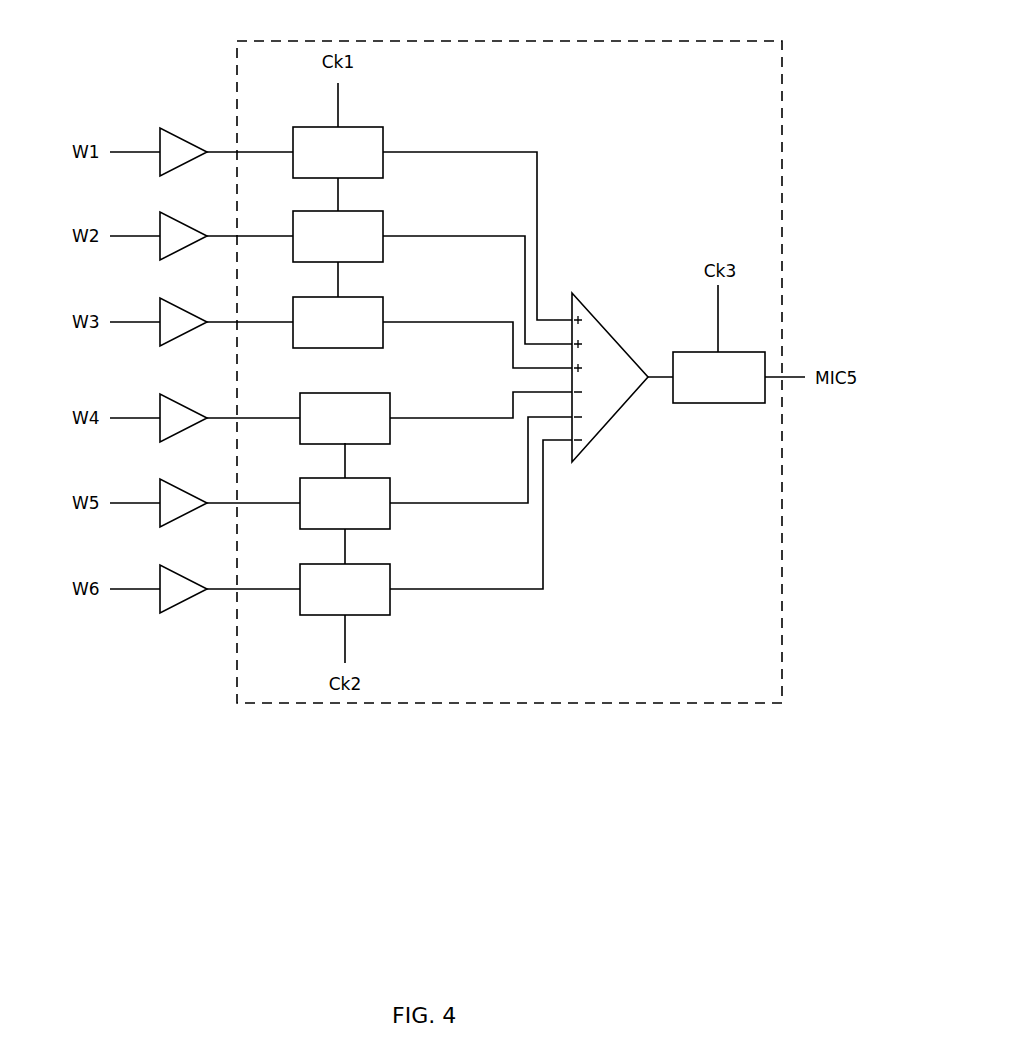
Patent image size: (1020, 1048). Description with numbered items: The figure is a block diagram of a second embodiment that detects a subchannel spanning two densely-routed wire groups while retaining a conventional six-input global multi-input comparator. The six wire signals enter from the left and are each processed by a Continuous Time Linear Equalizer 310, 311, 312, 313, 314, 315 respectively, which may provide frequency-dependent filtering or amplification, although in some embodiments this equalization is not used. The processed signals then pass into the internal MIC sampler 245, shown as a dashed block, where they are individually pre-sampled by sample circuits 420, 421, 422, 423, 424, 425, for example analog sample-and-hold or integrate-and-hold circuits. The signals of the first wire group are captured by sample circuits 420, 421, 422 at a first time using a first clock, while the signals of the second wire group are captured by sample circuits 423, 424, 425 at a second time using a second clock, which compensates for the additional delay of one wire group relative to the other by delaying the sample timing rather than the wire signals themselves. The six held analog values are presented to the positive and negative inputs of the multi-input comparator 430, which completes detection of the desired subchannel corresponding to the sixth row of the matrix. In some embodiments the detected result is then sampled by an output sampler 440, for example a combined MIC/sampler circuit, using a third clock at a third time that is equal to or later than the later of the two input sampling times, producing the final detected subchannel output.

The internal MIC sampler 245 is at (575, 41).
The Continuous Time Linear Equalizer 310 is at (179, 134).
The Continuous Time Linear Equalizer 311 is at (179, 218).
The Continuous Time Linear Equalizer 312 is at (179, 304).
The Continuous Time Linear Equalizer 313 is at (179, 400).
The Continuous Time Linear Equalizer 314 is at (179, 485).
The Continuous Time Linear Equalizer 315 is at (179, 571).
The sampler 420 is at (313, 127).
The sampler 421 is at (313, 211).
The sampler 422 is at (313, 297).
The sampler 423 is at (320, 393).
The sampler 424 is at (320, 478).
The sampler 425 is at (320, 564).
The multi-input comparator 430 is at (620, 345).
The sampler 440 is at (697, 352).